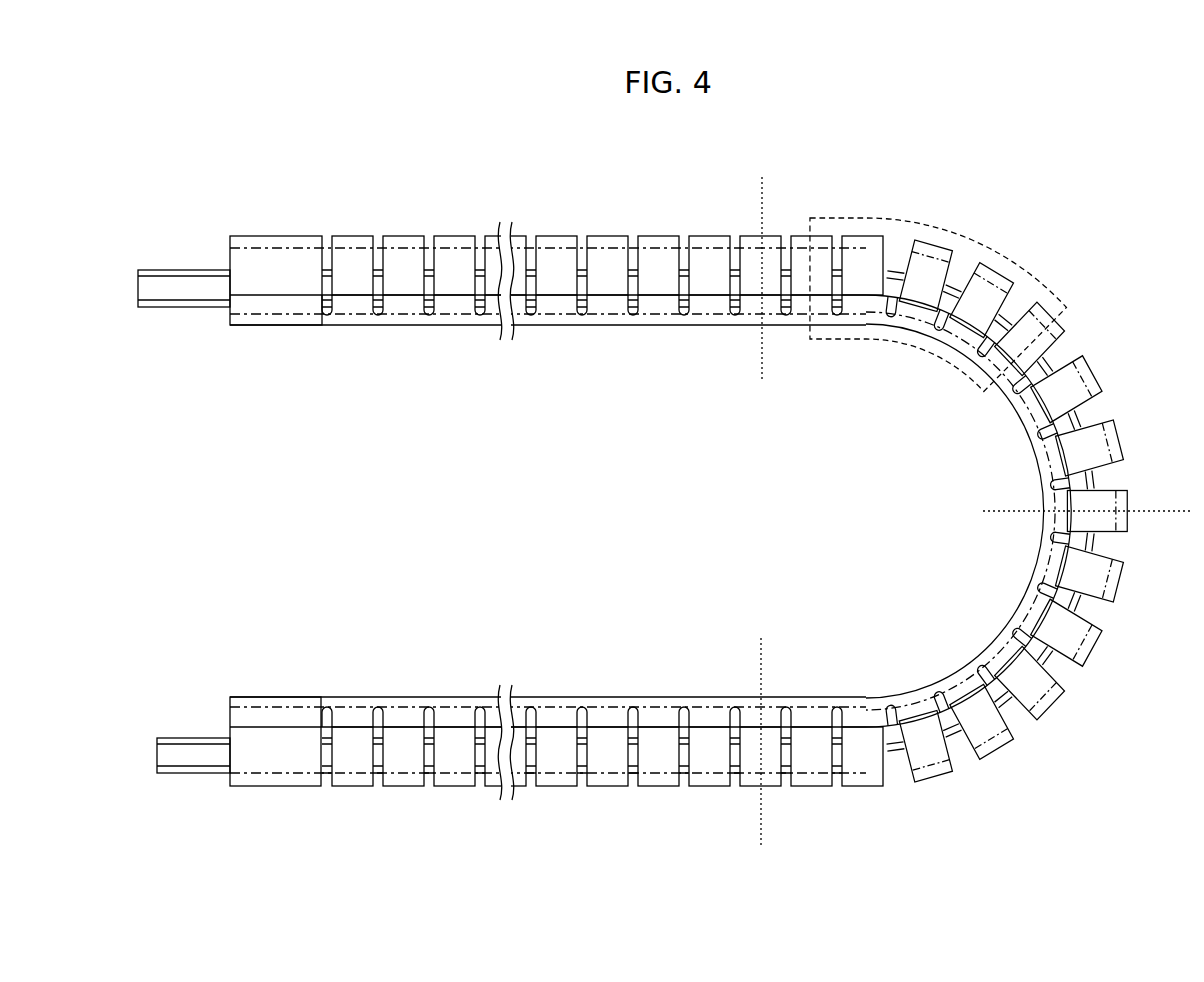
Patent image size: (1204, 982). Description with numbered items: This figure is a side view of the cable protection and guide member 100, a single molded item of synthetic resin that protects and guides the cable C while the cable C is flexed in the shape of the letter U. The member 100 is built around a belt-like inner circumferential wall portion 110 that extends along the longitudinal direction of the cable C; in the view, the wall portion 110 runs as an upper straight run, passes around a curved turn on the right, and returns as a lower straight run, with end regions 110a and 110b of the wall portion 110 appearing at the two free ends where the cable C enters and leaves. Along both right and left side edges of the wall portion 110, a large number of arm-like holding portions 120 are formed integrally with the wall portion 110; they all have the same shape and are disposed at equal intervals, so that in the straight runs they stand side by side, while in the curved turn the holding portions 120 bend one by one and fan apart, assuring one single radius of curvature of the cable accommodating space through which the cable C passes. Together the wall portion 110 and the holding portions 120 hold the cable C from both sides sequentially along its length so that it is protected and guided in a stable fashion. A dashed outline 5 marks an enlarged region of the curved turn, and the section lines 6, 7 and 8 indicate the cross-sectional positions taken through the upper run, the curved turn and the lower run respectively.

The cable protection and guide member 100 is at (1131, 168).
The belt-like inner circumferential wall portion 110 is at (608, 327).
The first end portion of band member 110a is at (277, 790).
The second end portion of band member 110b is at (275, 235).
The arm-like holding portions 120 is at (605, 258).
The cable C is at (170, 292).
The region shown in FIG. 5 is at (860, 218).
The section line 6- 6 is at (759, 190).
The section line 7- 7 is at (997, 508).
The section line 8- 8 is at (759, 653).